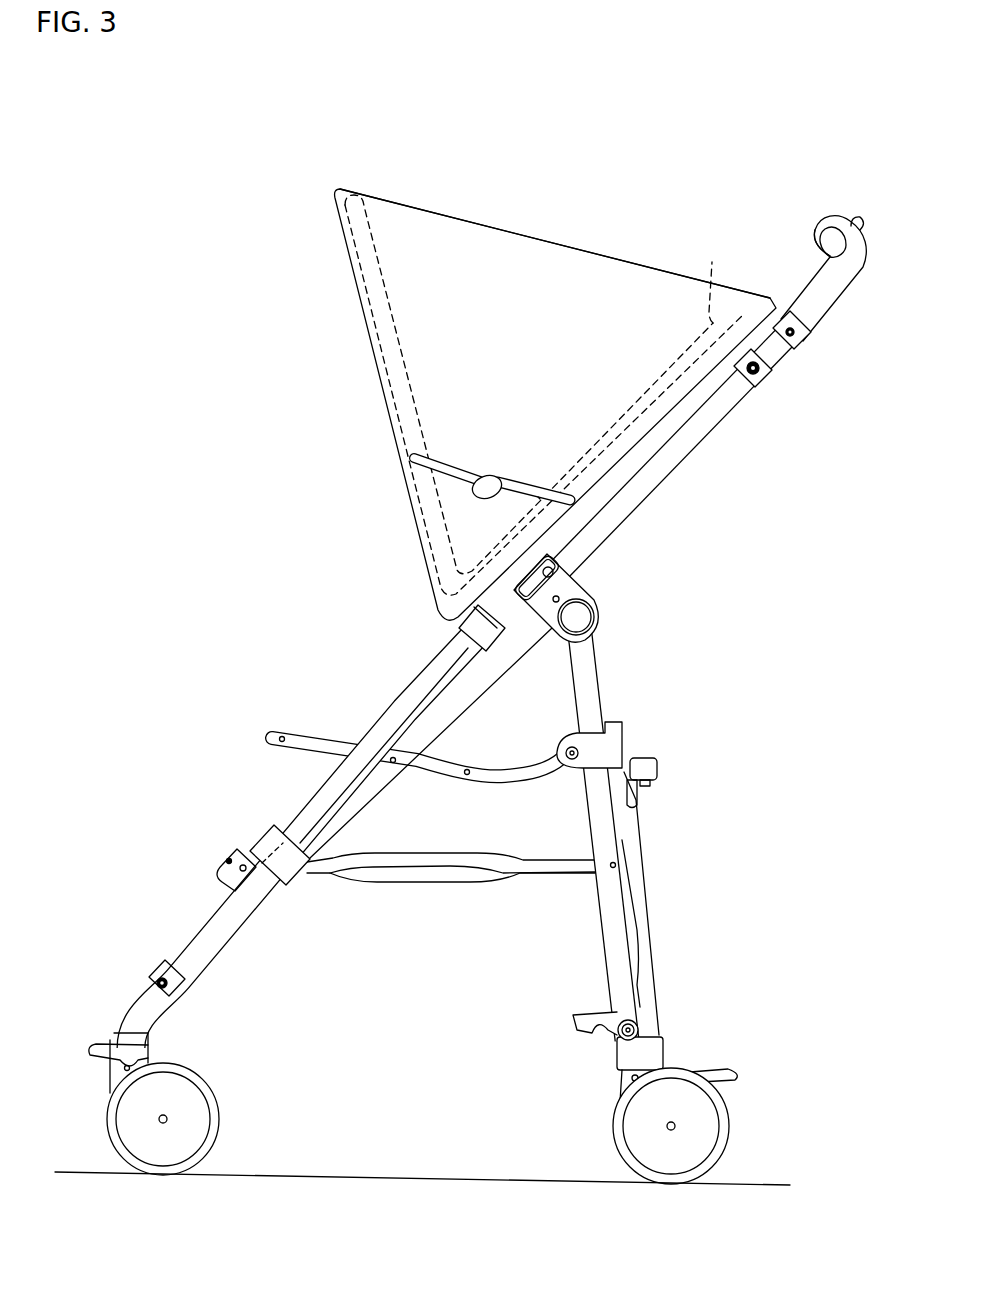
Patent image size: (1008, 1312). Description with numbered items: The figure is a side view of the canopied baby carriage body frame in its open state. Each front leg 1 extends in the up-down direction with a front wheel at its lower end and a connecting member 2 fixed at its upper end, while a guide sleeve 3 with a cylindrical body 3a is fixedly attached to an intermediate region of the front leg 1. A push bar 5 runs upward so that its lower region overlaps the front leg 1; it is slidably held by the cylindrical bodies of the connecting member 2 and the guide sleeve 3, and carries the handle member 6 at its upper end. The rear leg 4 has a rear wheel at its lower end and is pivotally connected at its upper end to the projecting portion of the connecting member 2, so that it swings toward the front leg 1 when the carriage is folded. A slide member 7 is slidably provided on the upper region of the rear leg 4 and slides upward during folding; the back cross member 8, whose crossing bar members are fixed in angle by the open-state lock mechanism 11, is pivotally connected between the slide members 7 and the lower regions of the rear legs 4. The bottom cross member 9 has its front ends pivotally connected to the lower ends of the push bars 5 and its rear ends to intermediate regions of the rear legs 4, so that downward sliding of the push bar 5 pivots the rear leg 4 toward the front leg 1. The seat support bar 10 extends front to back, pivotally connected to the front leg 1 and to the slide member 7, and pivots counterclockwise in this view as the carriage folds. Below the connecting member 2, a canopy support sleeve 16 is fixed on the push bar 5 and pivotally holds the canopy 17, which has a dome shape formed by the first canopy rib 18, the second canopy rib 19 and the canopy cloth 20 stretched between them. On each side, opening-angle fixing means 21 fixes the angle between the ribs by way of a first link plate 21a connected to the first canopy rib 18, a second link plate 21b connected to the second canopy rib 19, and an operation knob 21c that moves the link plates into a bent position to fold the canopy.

The front leg 1 is at (222, 930).
The connecting member 2 is at (580, 582).
The guide sleeve 3 is at (288, 877).
The cylindrical body 3a is at (262, 843).
The rear leg 4 is at (612, 940).
The push bar 5 is at (690, 432).
The handle member 6 is at (869, 193).
The slide member 7 is at (610, 745).
The back cross member 8 is at (688, 850).
The bottom cross member 9 is at (410, 909).
The seat support bar 10 is at (307, 742).
The open-state lock mechanism 11 is at (688, 774).
The canopy support sleeve 16 is at (465, 633).
The canopy 17 is at (589, 221).
The first canopy rib 18 is at (712, 262).
The second canopy rib 19 is at (366, 291).
The canopy cloth 20 is at (478, 247).
The opening-angle fixing means 21 is at (463, 496).
The first link plate 21a is at (538, 497).
The second link plate 21b is at (447, 467).
The operation knob 21c is at (447, 467).